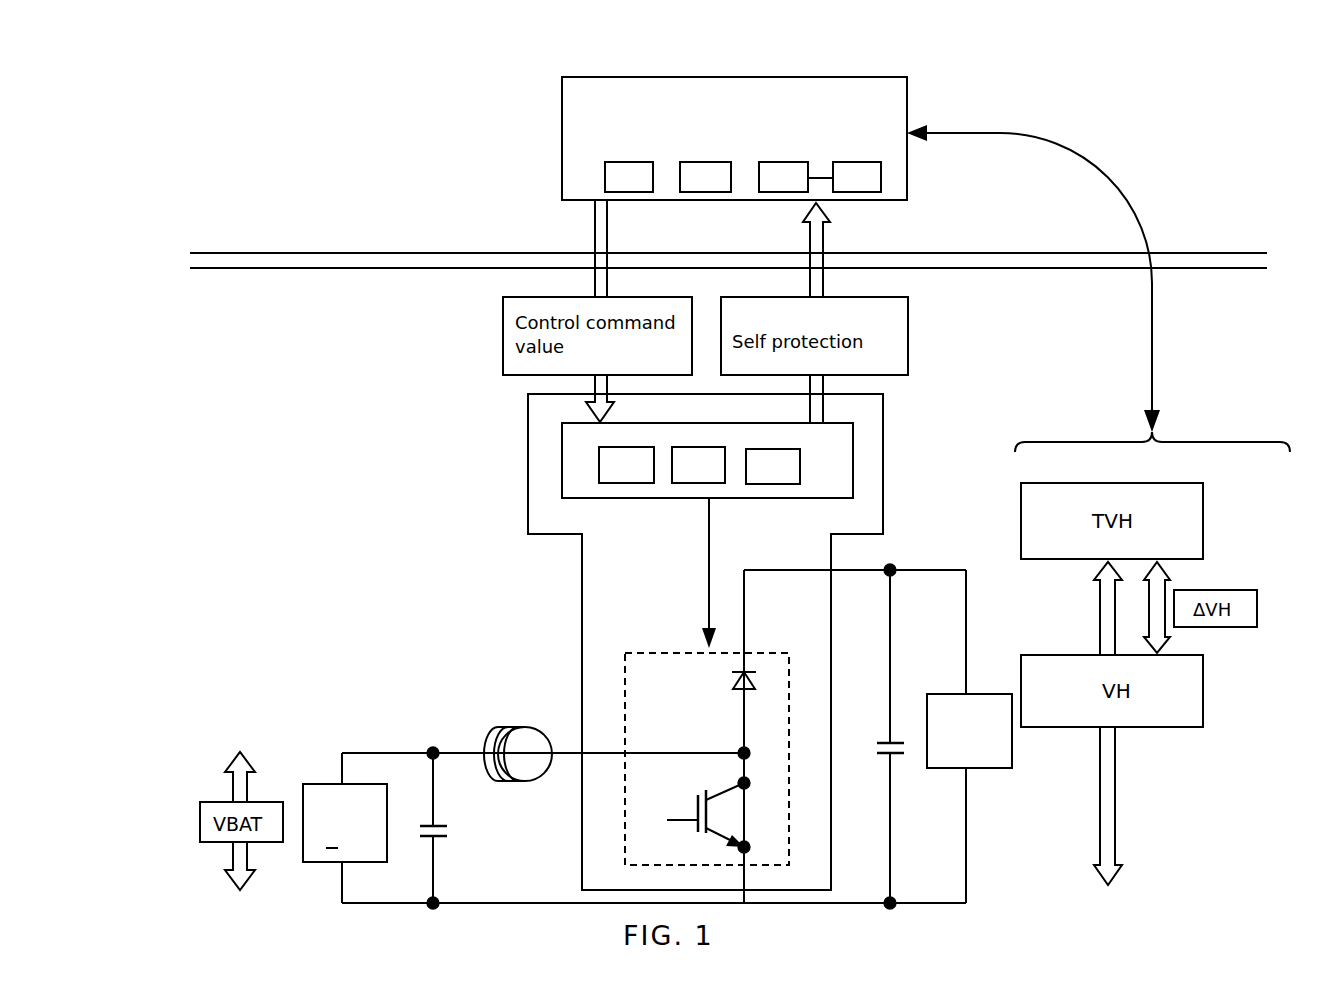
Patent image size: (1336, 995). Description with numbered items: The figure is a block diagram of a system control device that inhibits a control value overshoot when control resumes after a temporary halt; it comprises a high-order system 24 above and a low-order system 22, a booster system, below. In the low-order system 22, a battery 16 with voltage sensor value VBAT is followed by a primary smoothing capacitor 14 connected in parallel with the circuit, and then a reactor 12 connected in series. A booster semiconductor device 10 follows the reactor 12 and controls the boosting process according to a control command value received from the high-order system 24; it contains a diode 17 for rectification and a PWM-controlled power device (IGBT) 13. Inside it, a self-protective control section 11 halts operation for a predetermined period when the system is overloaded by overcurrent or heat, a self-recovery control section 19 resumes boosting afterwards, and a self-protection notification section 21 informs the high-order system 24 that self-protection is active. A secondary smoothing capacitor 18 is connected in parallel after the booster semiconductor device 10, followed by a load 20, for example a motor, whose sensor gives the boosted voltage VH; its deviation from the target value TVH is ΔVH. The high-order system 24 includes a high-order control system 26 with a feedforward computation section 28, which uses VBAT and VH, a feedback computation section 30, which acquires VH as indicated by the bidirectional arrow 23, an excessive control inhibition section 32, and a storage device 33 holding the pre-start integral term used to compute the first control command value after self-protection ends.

The booster semiconductor device 10 is at (883, 440).
The self-protective control section 11 is at (635, 483).
The reactor 12 is at (506, 727).
The power device (IGBT) 13 is at (699, 827).
The primary smoothing capacitor 14 is at (443, 826).
The battery 16 is at (322, 784).
The diode 17 is at (755, 686).
The secondary smoothing capacitor 18 is at (878, 745).
The self-recovery control section 19 is at (688, 483).
The load 20 is at (984, 694).
The self-protection notification section 21 is at (777, 480).
The low-order system 22 is at (340, 509).
The bidirectional arrow 23 is at (1088, 152).
The high-order system 24 is at (340, 152).
The high-order control system 26 is at (907, 90).
The feedforward computation section 28 is at (628, 162).
The feedback computation section 30 is at (706, 162).
The excessive control inhibition section 32 is at (780, 162).
The storage device 33 is at (854, 162).